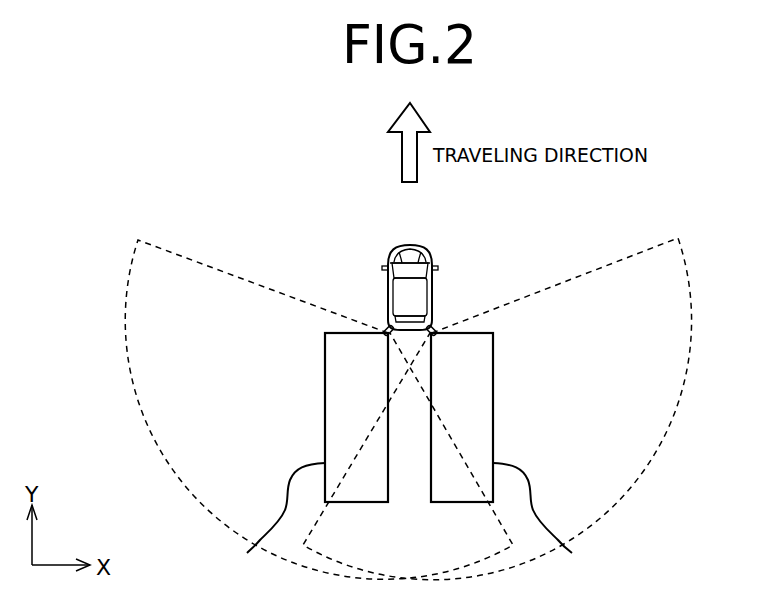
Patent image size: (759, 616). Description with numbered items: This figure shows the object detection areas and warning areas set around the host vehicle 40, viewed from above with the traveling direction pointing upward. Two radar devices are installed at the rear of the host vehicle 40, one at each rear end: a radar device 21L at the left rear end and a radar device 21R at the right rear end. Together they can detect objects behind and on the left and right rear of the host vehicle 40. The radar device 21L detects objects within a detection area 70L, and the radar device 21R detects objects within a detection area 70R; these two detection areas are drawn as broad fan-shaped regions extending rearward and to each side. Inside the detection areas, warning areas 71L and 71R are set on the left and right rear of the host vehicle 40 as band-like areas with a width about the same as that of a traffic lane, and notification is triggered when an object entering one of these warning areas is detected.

The host vehicle 40 is at (411, 246).
The radar device 21L is at (386, 328).
The radar device 21R is at (434, 328).
The detection area 70L is at (193, 257).
The detection area 70R is at (627, 258).
The warning area 71L is at (272, 522).
The warning area 71R is at (549, 522).